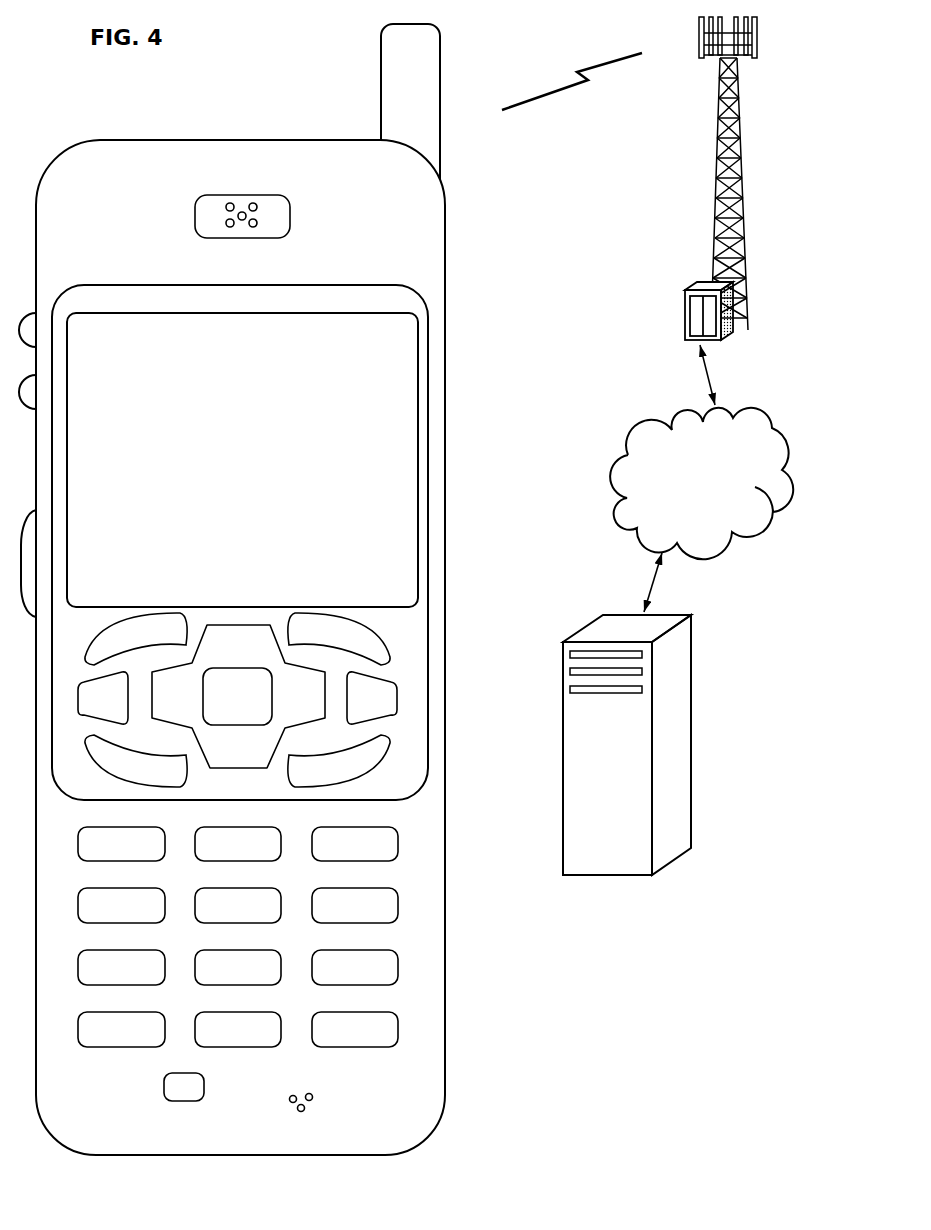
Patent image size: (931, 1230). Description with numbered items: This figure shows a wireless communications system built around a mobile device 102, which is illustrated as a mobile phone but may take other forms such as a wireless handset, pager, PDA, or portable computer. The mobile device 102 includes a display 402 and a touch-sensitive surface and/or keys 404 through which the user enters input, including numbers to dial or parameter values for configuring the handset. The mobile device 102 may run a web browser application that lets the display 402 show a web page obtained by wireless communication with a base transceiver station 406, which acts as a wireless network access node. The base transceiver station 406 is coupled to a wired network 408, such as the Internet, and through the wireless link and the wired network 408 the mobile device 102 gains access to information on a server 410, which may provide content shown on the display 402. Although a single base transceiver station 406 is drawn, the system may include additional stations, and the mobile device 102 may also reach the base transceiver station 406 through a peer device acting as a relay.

The mobile device 102 is at (96, 1156).
The display 402 is at (420, 316).
The keys 404 is at (452, 1057).
The base transceiver station 406 is at (715, 192).
The wired network 408 is at (618, 527).
The server 410 is at (612, 875).